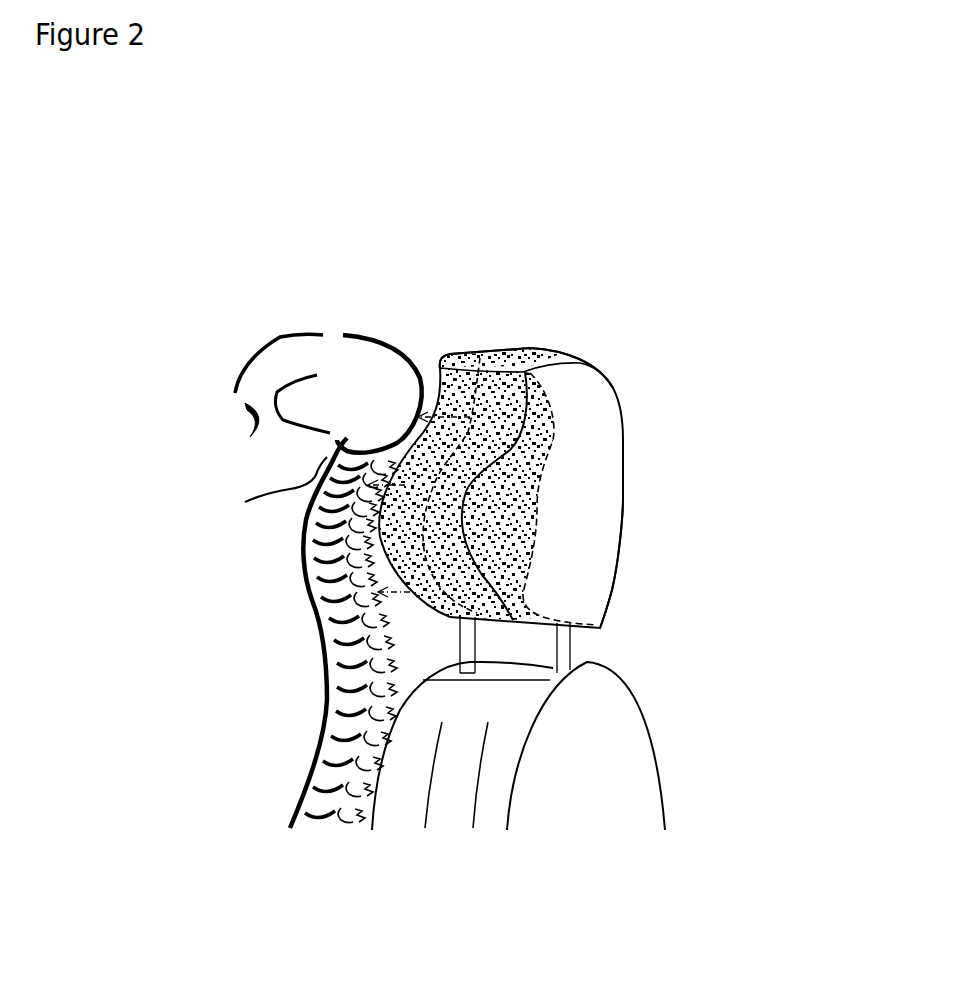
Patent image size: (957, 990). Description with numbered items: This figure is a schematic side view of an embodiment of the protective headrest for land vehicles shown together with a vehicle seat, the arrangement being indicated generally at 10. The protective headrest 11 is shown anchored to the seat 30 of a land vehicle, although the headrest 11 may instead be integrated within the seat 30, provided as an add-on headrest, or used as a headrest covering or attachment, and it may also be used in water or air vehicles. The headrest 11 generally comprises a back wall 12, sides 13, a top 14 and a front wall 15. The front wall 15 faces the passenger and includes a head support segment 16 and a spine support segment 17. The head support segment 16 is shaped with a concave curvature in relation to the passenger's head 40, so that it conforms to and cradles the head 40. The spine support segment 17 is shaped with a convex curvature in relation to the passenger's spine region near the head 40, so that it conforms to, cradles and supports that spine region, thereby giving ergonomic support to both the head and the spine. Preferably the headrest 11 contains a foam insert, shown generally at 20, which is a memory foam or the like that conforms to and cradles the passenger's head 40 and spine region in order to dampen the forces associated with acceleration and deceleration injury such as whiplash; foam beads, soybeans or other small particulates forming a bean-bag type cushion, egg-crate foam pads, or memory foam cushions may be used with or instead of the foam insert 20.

The protective headrest shown in conjunction with a seat 10 is at (183, 203).
The protective headrest for land vehicles 11 is at (583, 463).
The back wall 12 is at (623, 532).
The sides 13 is at (593, 569).
The top 14 is at (560, 350).
The front wall 15 is at (300, 540).
The head support segment 16 is at (425, 392).
The spine support segment 17 is at (306, 612).
The foam insert 20 is at (480, 358).
The seat 30 is at (595, 768).
The passenger's head 40 is at (253, 382).